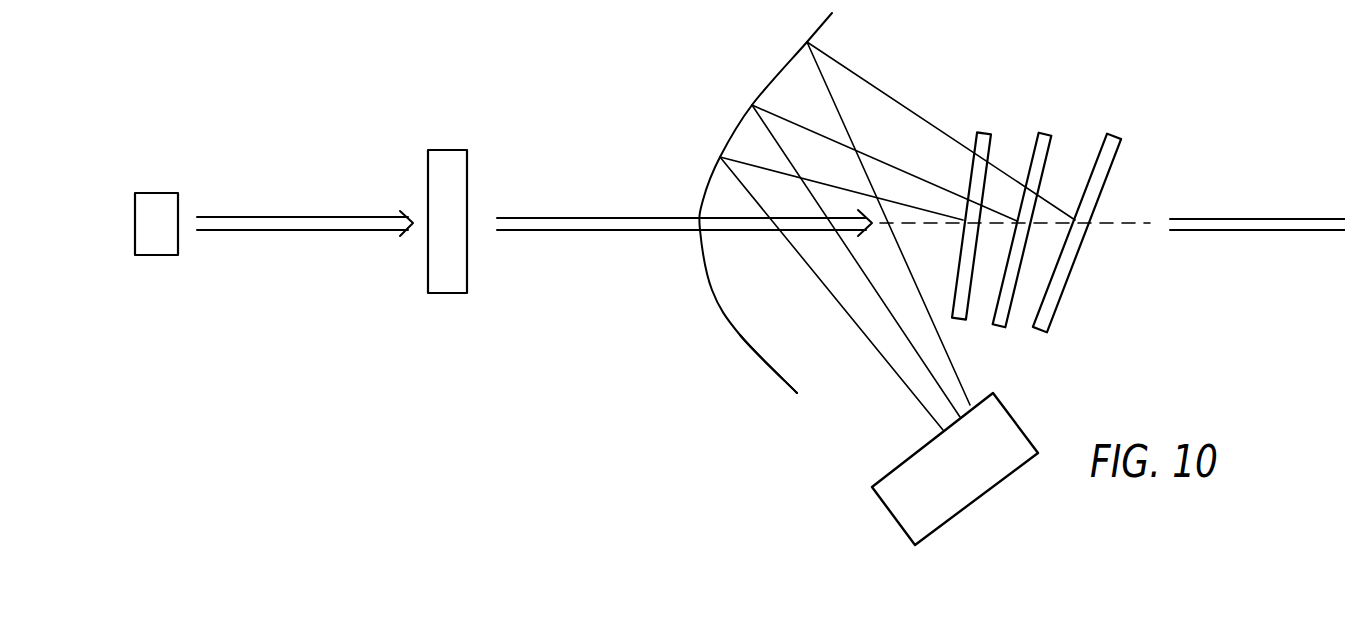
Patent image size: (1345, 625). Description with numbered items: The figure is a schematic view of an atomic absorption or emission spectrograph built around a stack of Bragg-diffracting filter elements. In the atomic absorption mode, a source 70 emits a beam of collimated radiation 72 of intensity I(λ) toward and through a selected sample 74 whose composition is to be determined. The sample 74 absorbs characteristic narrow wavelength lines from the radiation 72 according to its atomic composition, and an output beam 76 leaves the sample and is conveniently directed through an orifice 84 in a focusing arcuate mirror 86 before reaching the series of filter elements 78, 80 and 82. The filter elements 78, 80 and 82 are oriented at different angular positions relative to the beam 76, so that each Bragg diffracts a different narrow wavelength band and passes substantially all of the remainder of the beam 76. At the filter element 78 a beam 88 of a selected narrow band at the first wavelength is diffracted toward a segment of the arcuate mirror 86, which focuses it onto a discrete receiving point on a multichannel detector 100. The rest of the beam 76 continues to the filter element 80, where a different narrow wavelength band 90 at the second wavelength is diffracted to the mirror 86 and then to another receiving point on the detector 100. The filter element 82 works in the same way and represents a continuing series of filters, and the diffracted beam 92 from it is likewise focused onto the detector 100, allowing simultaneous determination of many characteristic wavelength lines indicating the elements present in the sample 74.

The source 70 is at (160, 255).
The beam of collimated radiation 72 is at (300, 231).
The sample 74 is at (450, 293).
The output beam 76 is at (614, 231).
The filter element 78 is at (984, 133).
The filter element 80 is at (1046, 133).
The filter element 82 is at (1113, 137).
The orifice 84 is at (698, 233).
The focusing arcuate mirror 86 is at (740, 335).
The beam 88 is at (903, 203).
The narrow wavelength band 90 is at (870, 155).
The diffracted beam of third wavelength 92 is at (843, 65).
The multichannel detector 100 is at (900, 514).